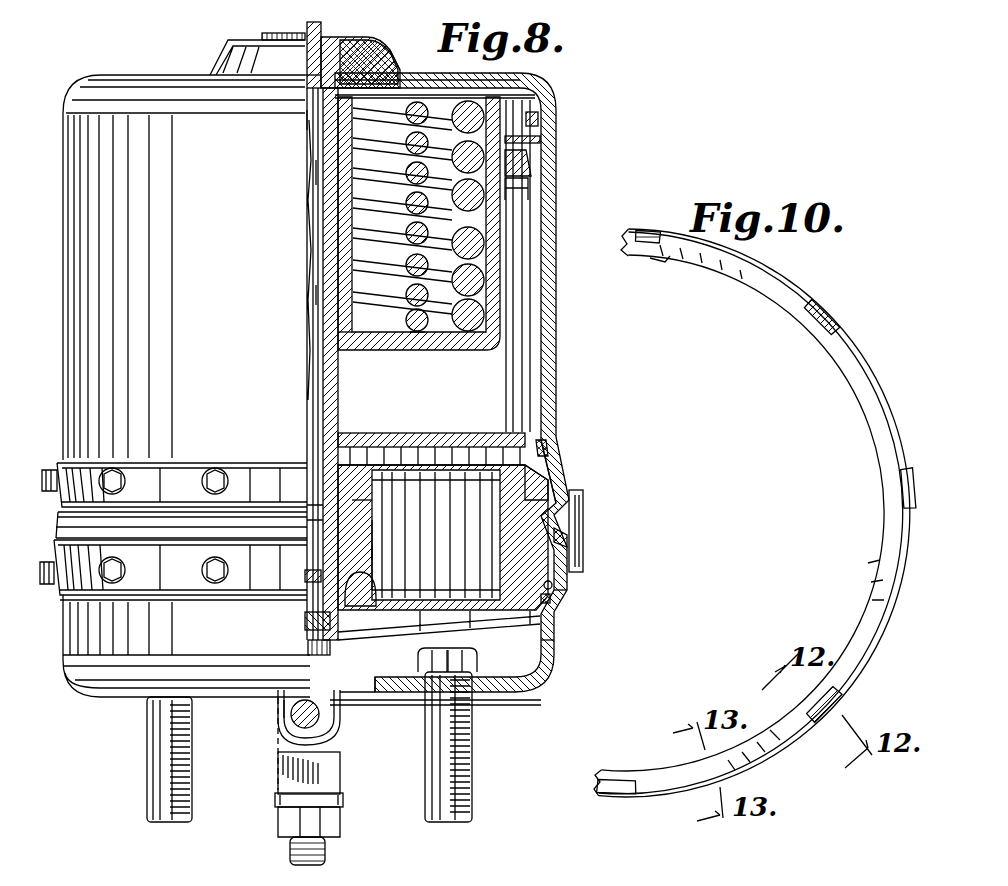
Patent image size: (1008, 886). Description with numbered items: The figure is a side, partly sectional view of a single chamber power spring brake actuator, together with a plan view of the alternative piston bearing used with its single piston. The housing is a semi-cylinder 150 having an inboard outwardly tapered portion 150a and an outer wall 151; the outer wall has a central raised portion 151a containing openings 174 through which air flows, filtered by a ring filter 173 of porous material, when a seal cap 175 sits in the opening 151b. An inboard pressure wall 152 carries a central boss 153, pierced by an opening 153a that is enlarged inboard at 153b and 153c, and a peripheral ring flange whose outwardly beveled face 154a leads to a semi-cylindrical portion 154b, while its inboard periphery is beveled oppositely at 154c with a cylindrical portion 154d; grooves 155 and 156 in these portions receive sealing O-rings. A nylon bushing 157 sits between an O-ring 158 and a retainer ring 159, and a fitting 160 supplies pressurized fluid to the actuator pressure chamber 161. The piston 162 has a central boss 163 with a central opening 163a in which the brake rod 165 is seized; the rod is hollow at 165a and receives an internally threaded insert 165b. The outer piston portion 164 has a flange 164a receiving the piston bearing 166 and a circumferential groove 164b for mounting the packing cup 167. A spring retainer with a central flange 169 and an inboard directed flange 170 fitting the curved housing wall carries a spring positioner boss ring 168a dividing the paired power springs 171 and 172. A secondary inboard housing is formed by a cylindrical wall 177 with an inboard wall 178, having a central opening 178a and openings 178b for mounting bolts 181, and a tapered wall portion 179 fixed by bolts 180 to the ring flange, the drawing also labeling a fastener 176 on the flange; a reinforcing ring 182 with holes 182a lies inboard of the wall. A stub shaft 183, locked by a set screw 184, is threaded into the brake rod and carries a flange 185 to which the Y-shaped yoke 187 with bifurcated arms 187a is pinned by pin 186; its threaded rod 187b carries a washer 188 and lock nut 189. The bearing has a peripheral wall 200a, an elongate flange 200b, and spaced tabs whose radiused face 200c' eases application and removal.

In FIG. 8, the semi-cylinder 150 is at (557, 335).
In FIG. 8, the inboard outwardly tapered portion 150a is at (550, 478).
In FIG. 8, the outer wall 151 is at (445, 84).
In FIG. 8, the central raised portion 151a is at (396, 50).
In FIG. 8, the opening 151b is at (318, 42).
In FIG. 8, the inboard pressure wall 152 is at (460, 615).
In FIG. 8, the central boss 153 is at (408, 600).
In FIG. 8, the opening 153a is at (352, 530).
In FIG. 8, the enlarged opening portion 153b is at (305, 575).
In FIG. 8, the enlarged opening portion 153c is at (368, 575).
In FIG. 8, the outwardly beveled face 154a is at (548, 495).
In FIG. 8, the semi-cylindrical portion 154b is at (552, 432).
In FIG. 8, the beveled inboard periphery 154c is at (568, 537).
In FIG. 8, the cylindrical portion 154d is at (558, 596).
In FIG. 8, the groove 155 is at (525, 428).
In FIG. 8, the groove 156 is at (552, 600).
In FIG. 8, the nylon bushing 157 is at (372, 545).
In FIG. 8, the O-ring 158 is at (312, 512).
In FIG. 8, the retainer ring 159 is at (372, 596).
In FIG. 8, the fitting 160 is at (583, 556).
In FIG. 8, the actuator pressure chamber 161 is at (528, 375).
In FIG. 8, the piston 162 is at (425, 350).
In FIG. 8, the central boss 163 is at (308, 234).
In FIG. 8, the central opening 163a is at (312, 120).
In FIG. 8, the peripheral flange 164 is at (500, 272).
In FIG. 8, the flange 164a is at (540, 146).
In FIG. 8, the circumferential groove 164b is at (512, 168).
In FIG. 8, the brake rod 165 is at (315, 260).
In FIG. 8, the hollow center 165a is at (320, 295).
In FIG. 8, the internally threaded insert 165b is at (316, 172).
In FIG. 8, the piston bearing 166 is at (540, 128).
In FIG. 8, the packing cup 167 is at (525, 183).
In FIG. 8, the spring positioner boss ring 168a is at (452, 98).
In FIG. 8, the central flange 169 is at (335, 72).
In FIG. 8, the peripheral inboard directed flange 170 is at (545, 103).
In FIG. 8, the power spring 171 is at (415, 335).
In FIG. 8, the power spring 172 is at (468, 332).
In FIG. 8, the ring filter 173 is at (340, 50).
In FIG. 8, the openings 174 is at (330, 78).
In FIG. 8, the seal cap 175 is at (300, 58).
In FIG. 8, the flange bolt 176 is at (214, 466).
In FIG. 8, the cylindrical wall 177 is at (550, 659).
In FIG. 8, the inboard wall 178 is at (512, 692).
In FIG. 8, the central opening 178a is at (368, 694).
In FIG. 8, the openings 178b is at (435, 712).
In FIG. 8, the outboard outwardly tapered wall portion 179 is at (567, 583).
In FIG. 8, the bolts 180 is at (228, 572).
In FIG. 8, the bolts 181 is at (472, 818).
In FIG. 8, the reinforcing ring 182 is at (505, 678).
In FIG. 8, the holes 182a is at (436, 665).
In FIG. 8, the stub shaft 183 is at (312, 628).
In FIG. 8, the set screw 184 is at (312, 648).
In FIG. 8, the flange 185 is at (284, 705).
In FIG. 8, the pin 186 is at (290, 722).
In FIG. 8, the Y-shaped yoke 187 is at (282, 792).
In FIG. 8, the bifurcated arms 187a is at (345, 744).
In FIG. 8, the externally threaded rod 187b is at (292, 858).
In FIG. 8, the washer 188 is at (338, 815).
In FIG. 8, the lock nut 189 is at (333, 850).
In FIG. 10, the peripheral wall 200a is at (870, 661).
In FIG. 10, the elongate flange 200b is at (870, 625).
In FIG. 10, the radiused face 200c' is at (756, 512).